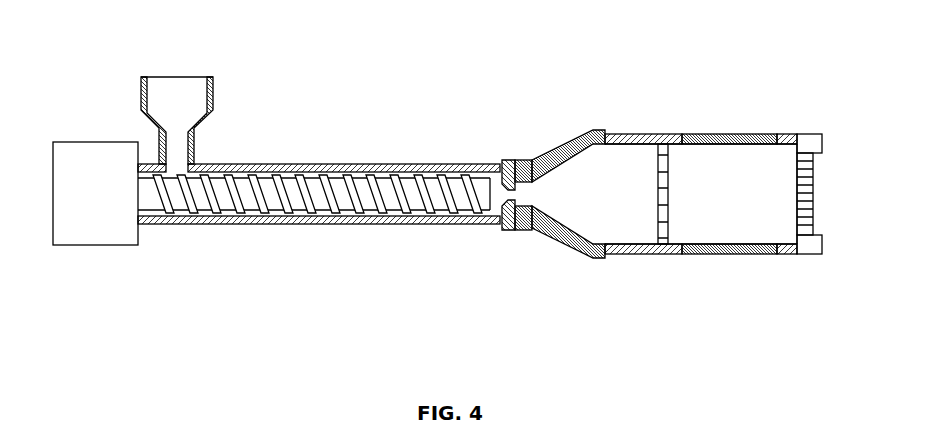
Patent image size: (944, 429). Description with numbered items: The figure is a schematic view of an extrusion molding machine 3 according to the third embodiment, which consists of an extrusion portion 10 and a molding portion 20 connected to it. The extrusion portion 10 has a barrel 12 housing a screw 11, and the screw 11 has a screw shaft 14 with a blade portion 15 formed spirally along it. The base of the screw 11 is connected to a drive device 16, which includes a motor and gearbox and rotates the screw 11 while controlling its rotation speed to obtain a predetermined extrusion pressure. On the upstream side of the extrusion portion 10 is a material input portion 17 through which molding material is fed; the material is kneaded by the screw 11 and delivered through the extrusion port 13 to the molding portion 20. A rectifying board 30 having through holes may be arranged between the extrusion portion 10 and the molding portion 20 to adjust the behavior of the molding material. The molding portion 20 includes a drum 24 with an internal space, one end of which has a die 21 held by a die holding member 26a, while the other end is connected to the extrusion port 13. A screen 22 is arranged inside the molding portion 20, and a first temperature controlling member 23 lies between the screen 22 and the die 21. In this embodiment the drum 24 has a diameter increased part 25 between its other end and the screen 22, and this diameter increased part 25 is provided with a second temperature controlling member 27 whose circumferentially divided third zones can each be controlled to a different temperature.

The extrusion molding machine 3 is at (453, 202).
The extrusion portion 10 is at (292, 190).
The screw 11 is at (314, 135).
The barrel 12 is at (283, 164).
The extrusion port 13 is at (498, 192).
The screw shaft 14 is at (382, 188).
The blade portion 15 is at (367, 122).
The drive device 16 is at (88, 157).
The material input portion 17 is at (214, 98).
The molding portion 20 is at (686, 183).
The die 21 is at (807, 175).
The screen 22 is at (665, 168).
The first temperature controlling member 23 is at (743, 134).
The drum 24 is at (630, 134).
The diameter increased part 25 is at (562, 146).
The die holding member 26a is at (803, 145).
The second temperature controlling member 27 is at (540, 162).
The rectifying board 30 is at (507, 160).